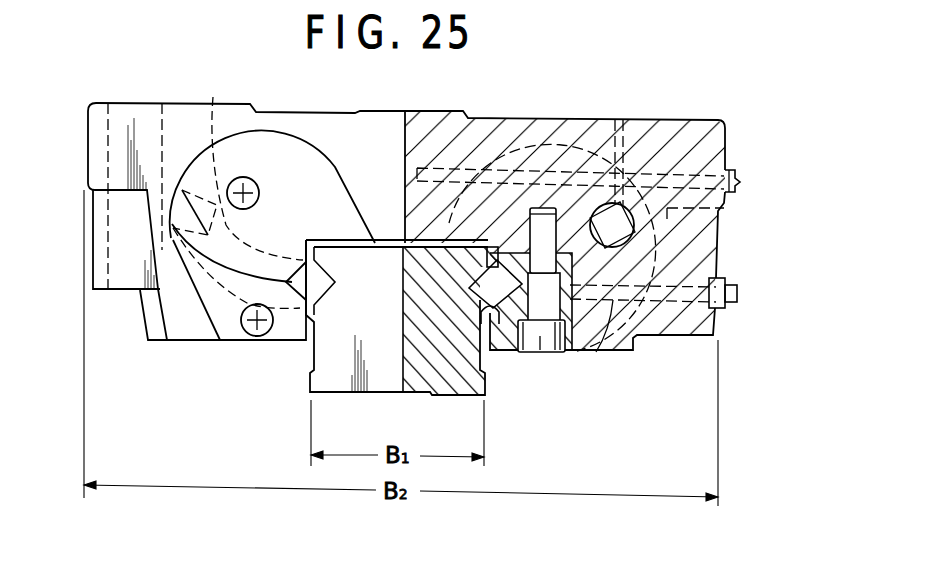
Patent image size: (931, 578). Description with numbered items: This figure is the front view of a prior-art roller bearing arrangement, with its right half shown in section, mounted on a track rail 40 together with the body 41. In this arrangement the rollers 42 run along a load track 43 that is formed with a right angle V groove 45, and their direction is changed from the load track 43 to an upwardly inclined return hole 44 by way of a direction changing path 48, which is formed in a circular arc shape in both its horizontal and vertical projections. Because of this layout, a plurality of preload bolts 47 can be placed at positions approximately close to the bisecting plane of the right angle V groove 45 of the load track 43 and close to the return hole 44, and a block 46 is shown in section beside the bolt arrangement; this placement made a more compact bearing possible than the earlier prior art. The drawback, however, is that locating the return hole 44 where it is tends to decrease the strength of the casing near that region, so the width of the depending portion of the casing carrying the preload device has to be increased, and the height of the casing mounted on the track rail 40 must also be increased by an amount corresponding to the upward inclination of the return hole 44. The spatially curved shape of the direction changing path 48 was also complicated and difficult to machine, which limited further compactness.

The track rail 40 is at (367, 394).
The body 41 is at (690, 121).
The rollers 42 is at (476, 250).
The load track 43 is at (543, 333).
The return hole 44 is at (735, 224).
The right angle V groove 45 is at (482, 328).
The clamp block 46 is at (608, 347).
The preload bolts 47 is at (738, 292).
The direction changing path 48 is at (235, 288).